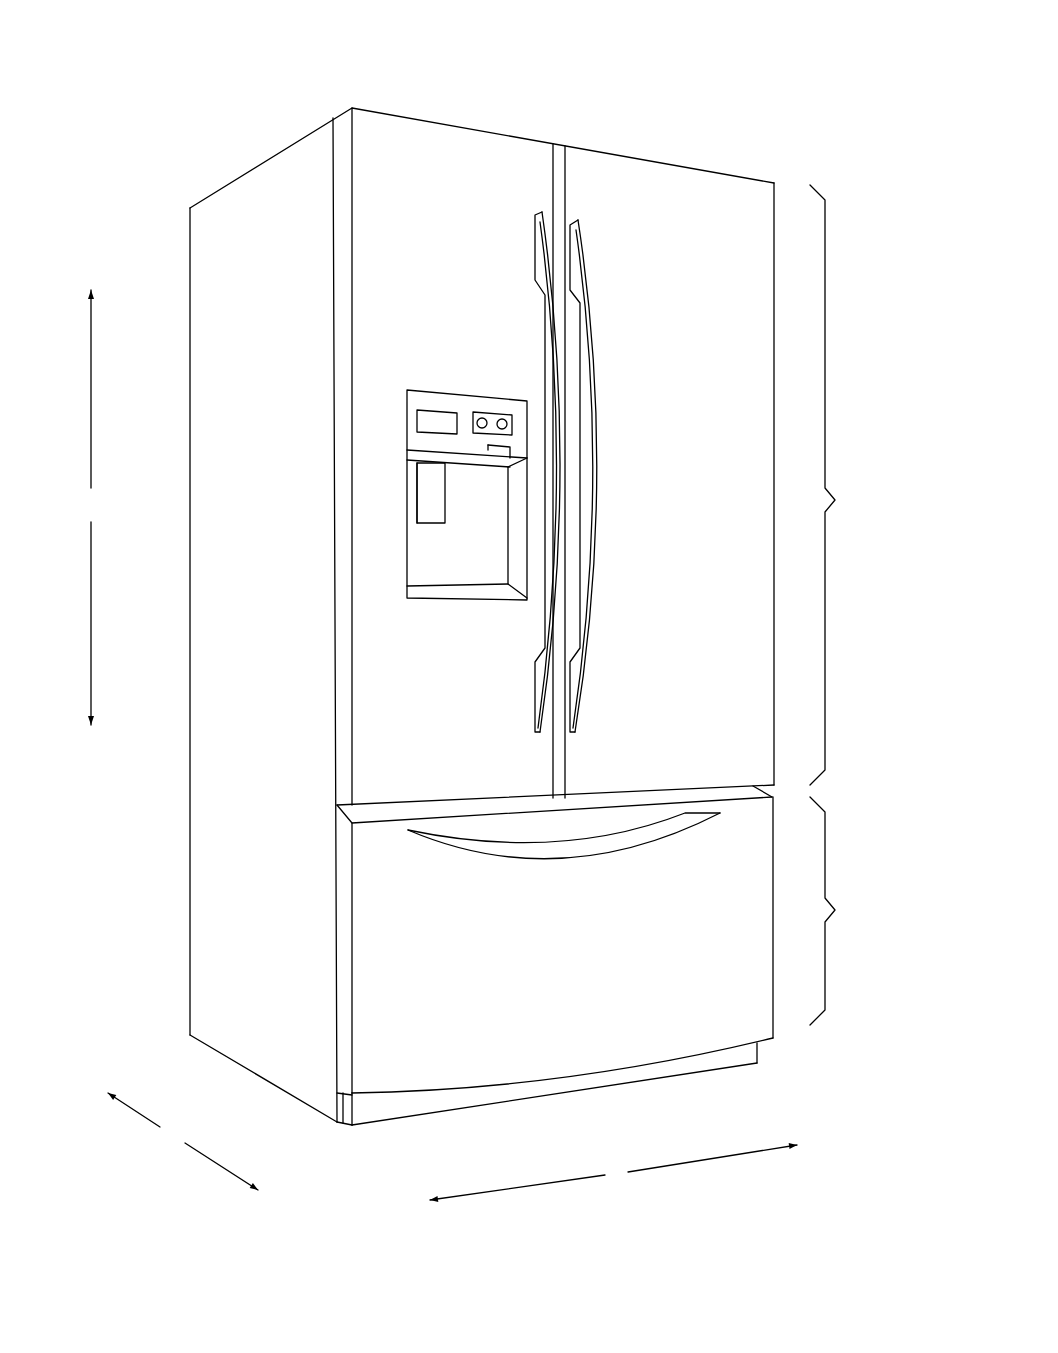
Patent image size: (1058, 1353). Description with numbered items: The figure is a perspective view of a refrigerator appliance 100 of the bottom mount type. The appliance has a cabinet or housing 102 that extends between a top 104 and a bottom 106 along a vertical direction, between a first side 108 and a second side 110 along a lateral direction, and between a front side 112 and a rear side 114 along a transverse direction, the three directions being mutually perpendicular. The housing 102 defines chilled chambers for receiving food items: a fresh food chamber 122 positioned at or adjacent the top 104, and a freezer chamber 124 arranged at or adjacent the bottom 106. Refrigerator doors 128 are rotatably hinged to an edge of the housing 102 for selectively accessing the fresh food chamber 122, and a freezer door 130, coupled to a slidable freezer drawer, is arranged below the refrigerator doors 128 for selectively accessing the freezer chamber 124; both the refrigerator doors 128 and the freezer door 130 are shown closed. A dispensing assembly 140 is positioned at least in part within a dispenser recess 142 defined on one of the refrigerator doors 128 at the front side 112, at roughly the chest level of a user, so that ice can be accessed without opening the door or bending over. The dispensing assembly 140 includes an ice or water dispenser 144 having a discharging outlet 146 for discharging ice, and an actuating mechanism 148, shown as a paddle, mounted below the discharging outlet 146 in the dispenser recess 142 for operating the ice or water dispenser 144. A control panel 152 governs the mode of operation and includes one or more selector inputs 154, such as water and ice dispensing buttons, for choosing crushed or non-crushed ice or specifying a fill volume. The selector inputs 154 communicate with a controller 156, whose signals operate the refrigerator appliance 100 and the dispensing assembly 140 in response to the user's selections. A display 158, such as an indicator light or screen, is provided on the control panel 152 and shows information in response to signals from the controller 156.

The refrigerator appliance 100 is at (475, 653).
The cabinet or housing 102 is at (455, 669).
The top 104 is at (449, 158).
The bottom 106 is at (440, 1039).
The first side 108 is at (368, 1164).
The second side 110 is at (796, 655).
The front side 112 is at (531, 663).
The rear side 114 is at (206, 620).
The fresh food chamber 122 is at (842, 485).
The freezer chamber 124 is at (842, 911).
The refrigerator doors 128 is at (571, 471).
The freezer door 130 is at (562, 945).
The dispensing assembly 140 is at (504, 471).
The dispenser recess 142 is at (467, 556).
The ice or water dispenser 144 is at (401, 493).
The discharging outlet 146 is at (442, 451).
The actuating mechanism 148 is at (400, 541).
The control panel 152 is at (504, 467).
The selector inputs 154 is at (499, 381).
The controller 156 is at (562, 445).
The display 158 is at (441, 389).